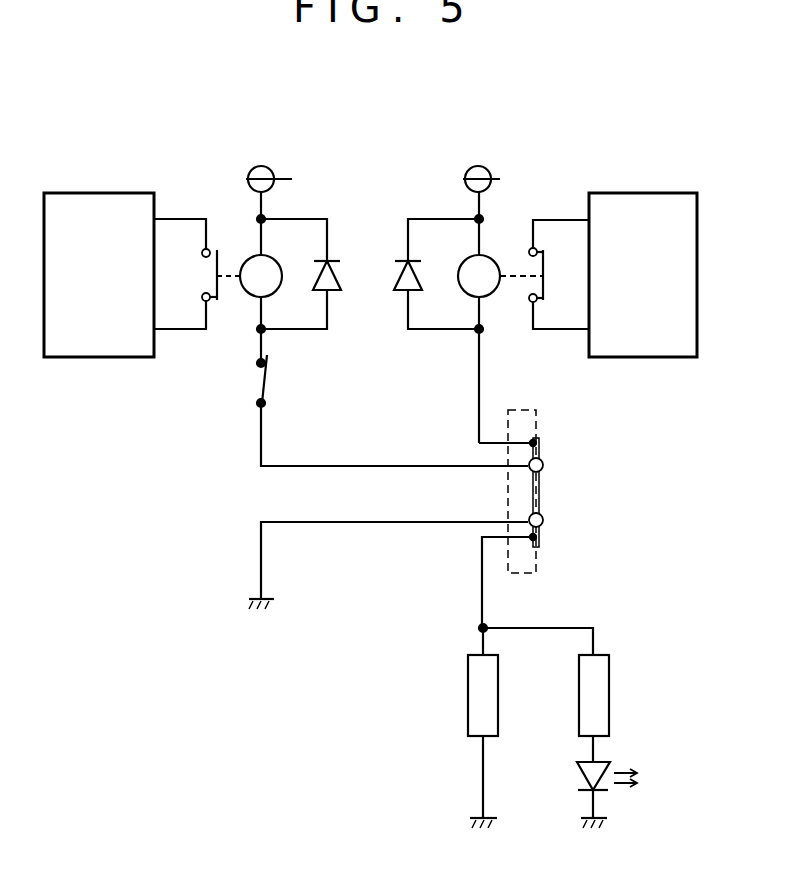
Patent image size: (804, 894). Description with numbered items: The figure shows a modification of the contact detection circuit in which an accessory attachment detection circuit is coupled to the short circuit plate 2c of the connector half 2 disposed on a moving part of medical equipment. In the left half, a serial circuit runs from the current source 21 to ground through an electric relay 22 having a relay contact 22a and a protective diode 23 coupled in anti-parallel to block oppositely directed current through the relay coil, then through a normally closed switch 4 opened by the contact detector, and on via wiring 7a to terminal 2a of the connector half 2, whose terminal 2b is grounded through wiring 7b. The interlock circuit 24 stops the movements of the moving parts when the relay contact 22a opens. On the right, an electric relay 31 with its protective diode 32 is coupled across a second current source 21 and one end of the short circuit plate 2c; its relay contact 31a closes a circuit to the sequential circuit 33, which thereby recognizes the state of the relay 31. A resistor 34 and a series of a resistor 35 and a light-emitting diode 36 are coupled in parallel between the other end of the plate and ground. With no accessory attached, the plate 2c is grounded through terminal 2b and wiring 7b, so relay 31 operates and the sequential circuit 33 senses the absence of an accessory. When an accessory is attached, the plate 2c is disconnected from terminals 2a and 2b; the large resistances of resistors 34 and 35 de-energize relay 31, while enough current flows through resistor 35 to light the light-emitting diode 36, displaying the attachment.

The connector half 2 is at (542, 499).
The terminal 2a is at (544, 464).
The terminal 2b is at (543, 527).
The short circuit plate 2c is at (541, 493).
The normally closed switch 4 is at (266, 382).
The wiring 7a is at (349, 466).
The wiring 7b is at (322, 523).
The current source 21 is at (272, 170).
The electric relay 22 is at (248, 296).
The relay contact 22a is at (217, 250).
The protective diode 23 is at (338, 280).
The interlock circuit 24 is at (114, 358).
The electric relay 31 is at (495, 297).
The relay contact 31a is at (544, 252).
The protective diode 32 is at (393, 282).
The sequential circuit 33 is at (628, 358).
The resistor 34 is at (467, 693).
The resistor 35 is at (611, 692).
The light-emitting diode 36 is at (611, 762).